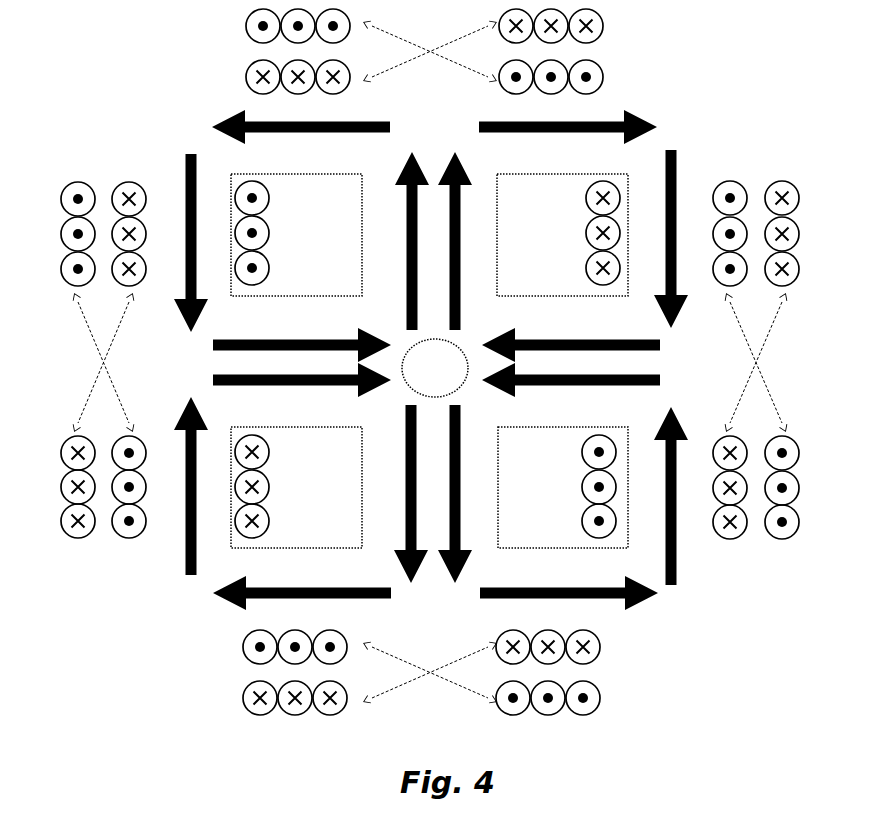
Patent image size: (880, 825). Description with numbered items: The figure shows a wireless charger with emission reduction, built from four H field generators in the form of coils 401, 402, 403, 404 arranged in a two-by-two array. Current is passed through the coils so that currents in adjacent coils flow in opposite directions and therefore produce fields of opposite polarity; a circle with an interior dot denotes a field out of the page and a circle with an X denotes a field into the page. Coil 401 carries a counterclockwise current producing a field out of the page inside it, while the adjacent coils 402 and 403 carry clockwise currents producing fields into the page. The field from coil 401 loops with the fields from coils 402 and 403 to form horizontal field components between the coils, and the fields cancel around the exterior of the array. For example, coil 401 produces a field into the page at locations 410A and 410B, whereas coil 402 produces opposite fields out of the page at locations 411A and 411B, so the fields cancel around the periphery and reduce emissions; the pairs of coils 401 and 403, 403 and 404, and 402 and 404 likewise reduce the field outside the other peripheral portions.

The coil 401 is at (338, 252).
The coil 402 is at (338, 500).
The coil 403 is at (559, 252).
The coil 404 is at (558, 500).
The location 410A is at (125, 182).
The location 410B is at (78, 538).
The location 411A is at (132, 538).
The location 411B is at (63, 182).